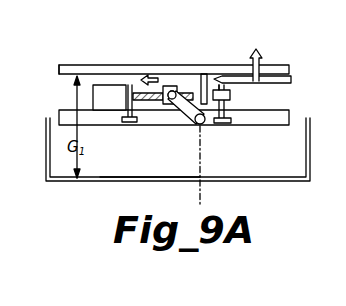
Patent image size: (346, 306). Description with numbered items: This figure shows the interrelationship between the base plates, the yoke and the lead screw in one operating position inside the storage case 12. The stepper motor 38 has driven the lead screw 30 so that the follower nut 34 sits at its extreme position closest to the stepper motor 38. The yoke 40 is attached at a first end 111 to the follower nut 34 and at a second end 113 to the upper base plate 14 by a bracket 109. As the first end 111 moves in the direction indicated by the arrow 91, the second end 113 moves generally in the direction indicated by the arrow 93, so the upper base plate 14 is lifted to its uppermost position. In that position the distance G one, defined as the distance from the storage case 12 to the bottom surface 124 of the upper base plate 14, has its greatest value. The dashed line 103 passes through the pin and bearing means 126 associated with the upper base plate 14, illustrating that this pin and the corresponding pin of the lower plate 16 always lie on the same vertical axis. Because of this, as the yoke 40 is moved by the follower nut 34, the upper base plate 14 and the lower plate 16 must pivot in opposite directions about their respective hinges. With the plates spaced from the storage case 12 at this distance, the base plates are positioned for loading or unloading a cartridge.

The storage case 12 is at (266, 181).
The upper base plate 14 is at (279, 66).
The lower plate 16 is at (279, 118).
The lead screw 30 is at (141, 91).
The follower nut 34 is at (174, 87).
The stepper motor 38 is at (112, 102).
The yoke 40 is at (181, 106).
The arrow 91 is at (150, 76).
The arrow 93 is at (281, 18).
The dashed line 103 is at (199, 192).
The bracket 109 is at (291, 80).
The first end 111 is at (182, 82).
The second end 113 is at (205, 124).
The bottom surface 124 is at (60, 81).
The pin and bearing means 126 is at (161, 176).